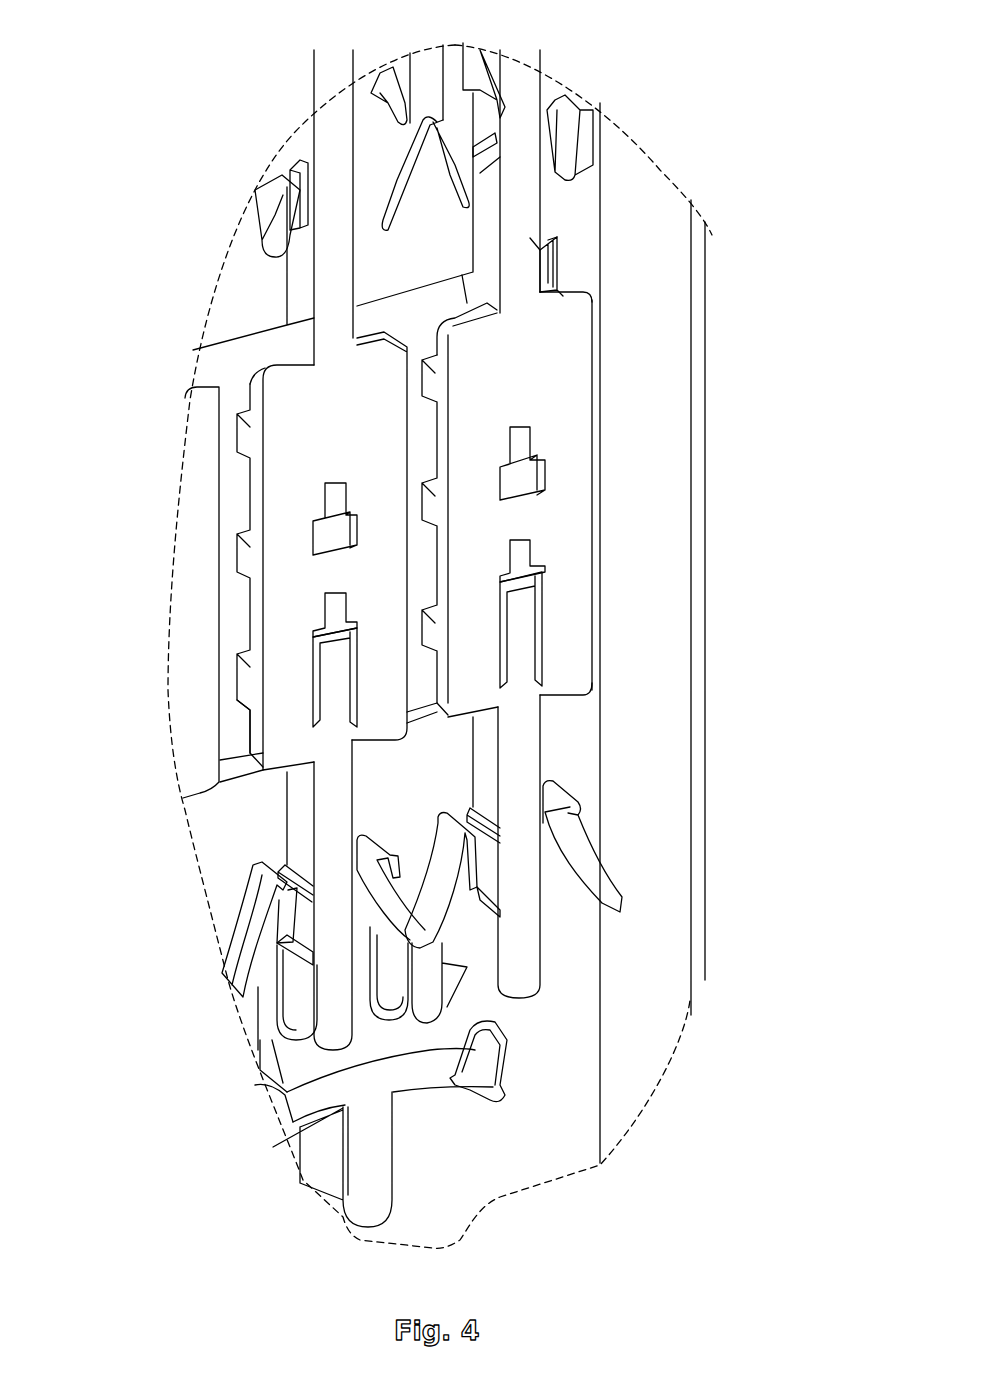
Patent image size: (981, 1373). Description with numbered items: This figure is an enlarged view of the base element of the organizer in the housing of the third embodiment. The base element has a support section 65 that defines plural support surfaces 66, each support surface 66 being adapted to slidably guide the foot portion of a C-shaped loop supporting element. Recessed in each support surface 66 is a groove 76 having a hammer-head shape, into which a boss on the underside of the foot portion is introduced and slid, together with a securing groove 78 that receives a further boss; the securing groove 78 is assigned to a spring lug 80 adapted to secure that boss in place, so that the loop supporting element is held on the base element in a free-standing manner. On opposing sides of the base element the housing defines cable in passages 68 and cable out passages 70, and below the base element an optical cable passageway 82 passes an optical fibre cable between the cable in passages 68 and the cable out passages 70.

The support section 65 is at (480, 441).
The support surface 66 is at (556, 380).
The cable in passage 68 is at (520, 948).
The cable out passage 70 is at (338, 135).
The groove 76 is at (520, 493).
The securing groove 78 is at (517, 590).
The spring lug 80 is at (517, 650).
The optical cable passageway 82 is at (555, 295).